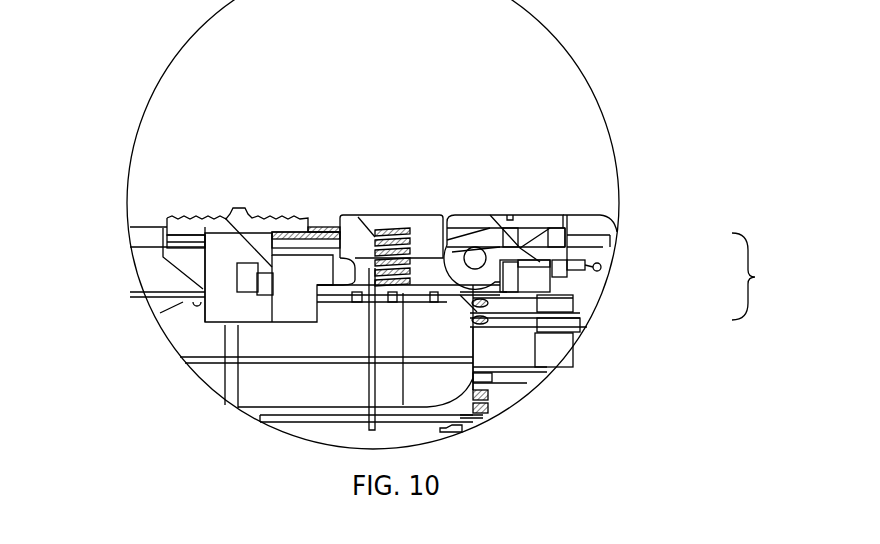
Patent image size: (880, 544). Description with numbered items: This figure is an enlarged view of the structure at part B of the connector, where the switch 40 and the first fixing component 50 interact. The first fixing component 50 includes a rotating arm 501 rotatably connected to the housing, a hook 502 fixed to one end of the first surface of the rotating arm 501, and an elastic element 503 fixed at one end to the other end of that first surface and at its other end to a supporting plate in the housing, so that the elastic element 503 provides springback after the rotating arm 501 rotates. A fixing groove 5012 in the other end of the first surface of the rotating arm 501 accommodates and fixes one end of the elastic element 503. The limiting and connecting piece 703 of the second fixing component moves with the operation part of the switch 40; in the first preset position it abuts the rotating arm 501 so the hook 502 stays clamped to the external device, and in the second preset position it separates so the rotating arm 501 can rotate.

The switch 40 is at (217, 208).
The limiting and connecting piece 703 is at (334, 232).
The fixing groove 5012 is at (403, 222).
The rotating arm 501 is at (590, 215).
The hook 502 is at (590, 263).
The elastic element 503 is at (590, 320).
The first fixing component 50 is at (761, 276).
The part B is at (612, 148).